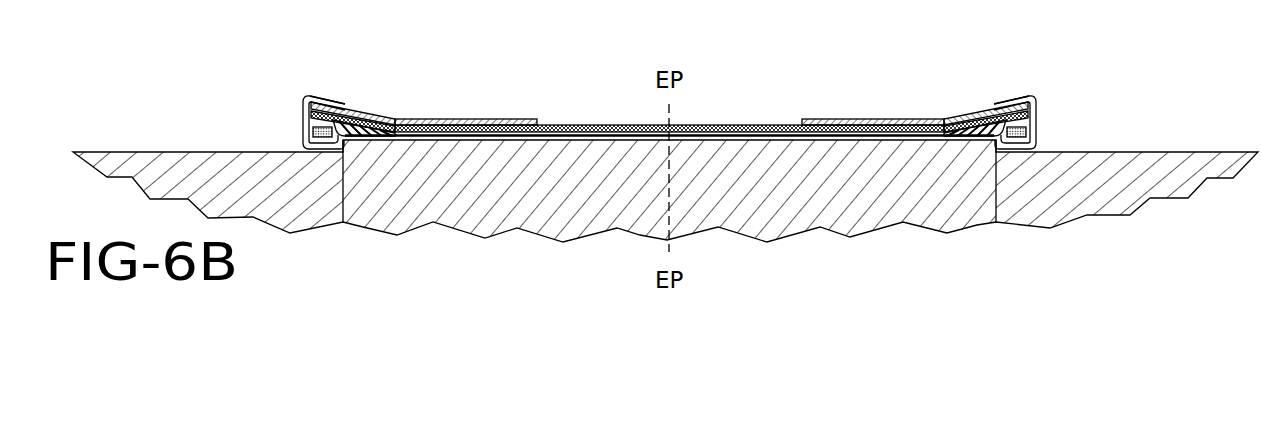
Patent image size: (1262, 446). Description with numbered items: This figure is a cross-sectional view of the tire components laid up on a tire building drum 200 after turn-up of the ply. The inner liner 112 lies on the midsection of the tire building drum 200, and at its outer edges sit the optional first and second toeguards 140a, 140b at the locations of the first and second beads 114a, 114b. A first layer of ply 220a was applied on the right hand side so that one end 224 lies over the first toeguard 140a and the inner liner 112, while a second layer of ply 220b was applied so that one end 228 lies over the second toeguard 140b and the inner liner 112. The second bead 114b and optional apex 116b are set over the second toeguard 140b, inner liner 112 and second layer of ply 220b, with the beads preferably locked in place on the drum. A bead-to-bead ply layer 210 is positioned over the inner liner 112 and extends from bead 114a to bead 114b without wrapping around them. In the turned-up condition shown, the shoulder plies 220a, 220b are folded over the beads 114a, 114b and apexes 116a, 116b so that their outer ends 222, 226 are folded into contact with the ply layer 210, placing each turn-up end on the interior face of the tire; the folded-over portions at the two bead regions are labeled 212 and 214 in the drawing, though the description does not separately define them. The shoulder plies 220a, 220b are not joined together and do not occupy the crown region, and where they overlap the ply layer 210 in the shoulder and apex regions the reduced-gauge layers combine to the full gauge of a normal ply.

The tire building drum 200 is at (558, 247).
The one end of the second ply layer 228 is at (360, 134).
The one end of the first ply layer 224 is at (982, 130).
The inner liner 112 is at (591, 134).
The ply layer 210 is at (733, 125).
The second end of the second ply layer 226 is at (537, 119).
The second end of the first ply layer 222 is at (815, 119).
The second layer of ply 220b is at (445, 119).
The first layer of ply 220a is at (890, 119).
The left cap layer 212 is at (323, 97).
The right cap layer 214 is at (1014, 97).
The second toeguard 140b is at (281, 88).
The first toeguard 140a is at (1054, 86).
The second bead 114b is at (304, 140).
The first bead 114a is at (1036, 146).
The apex 116b is at (355, 134).
The apex 116a is at (983, 127).